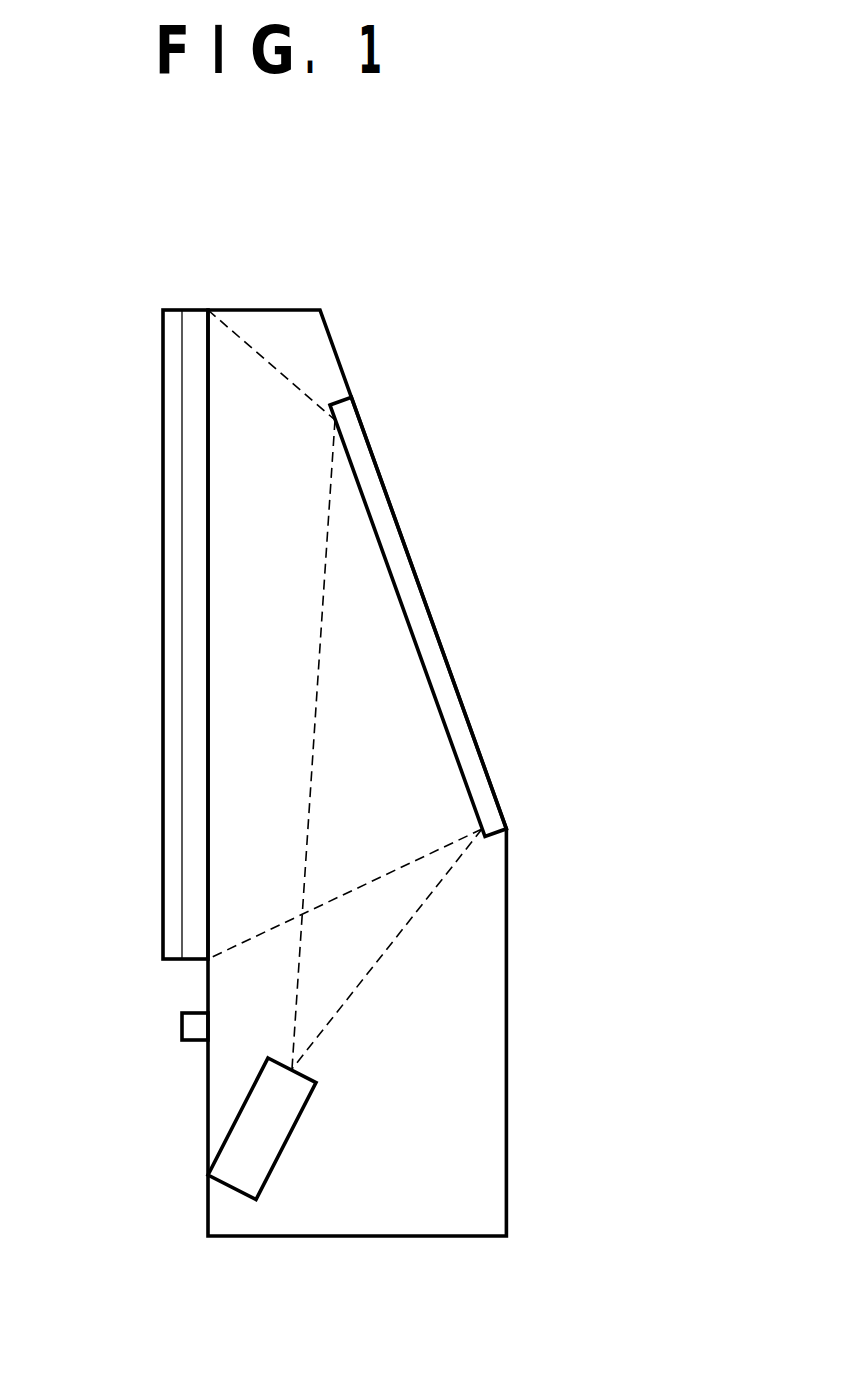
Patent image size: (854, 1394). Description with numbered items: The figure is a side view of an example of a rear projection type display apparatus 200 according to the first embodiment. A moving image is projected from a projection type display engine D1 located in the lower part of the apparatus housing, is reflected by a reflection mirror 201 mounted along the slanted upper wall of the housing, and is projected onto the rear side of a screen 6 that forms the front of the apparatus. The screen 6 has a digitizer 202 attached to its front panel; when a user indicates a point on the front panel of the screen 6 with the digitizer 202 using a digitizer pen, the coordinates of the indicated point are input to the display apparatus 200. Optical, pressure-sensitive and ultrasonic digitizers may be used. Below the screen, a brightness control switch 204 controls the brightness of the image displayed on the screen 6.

The rear projection type display apparatus 200 is at (477, 323).
The digitizer 202 is at (168, 382).
The screen 6 is at (197, 317).
The reflection mirror 201 is at (415, 573).
The brightness control switch 204 is at (187, 1026).
The projection type display engine D1 is at (230, 1128).